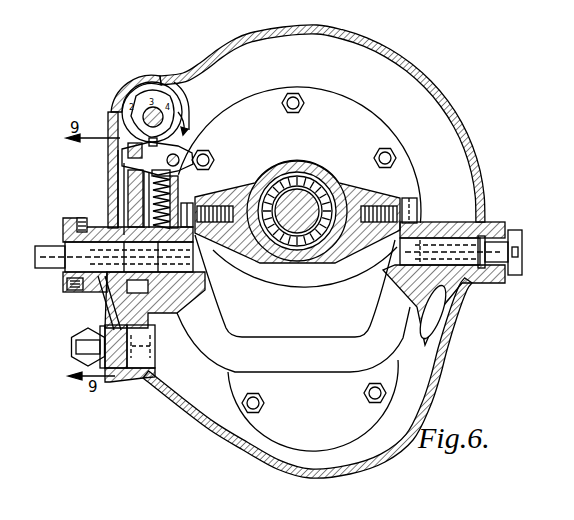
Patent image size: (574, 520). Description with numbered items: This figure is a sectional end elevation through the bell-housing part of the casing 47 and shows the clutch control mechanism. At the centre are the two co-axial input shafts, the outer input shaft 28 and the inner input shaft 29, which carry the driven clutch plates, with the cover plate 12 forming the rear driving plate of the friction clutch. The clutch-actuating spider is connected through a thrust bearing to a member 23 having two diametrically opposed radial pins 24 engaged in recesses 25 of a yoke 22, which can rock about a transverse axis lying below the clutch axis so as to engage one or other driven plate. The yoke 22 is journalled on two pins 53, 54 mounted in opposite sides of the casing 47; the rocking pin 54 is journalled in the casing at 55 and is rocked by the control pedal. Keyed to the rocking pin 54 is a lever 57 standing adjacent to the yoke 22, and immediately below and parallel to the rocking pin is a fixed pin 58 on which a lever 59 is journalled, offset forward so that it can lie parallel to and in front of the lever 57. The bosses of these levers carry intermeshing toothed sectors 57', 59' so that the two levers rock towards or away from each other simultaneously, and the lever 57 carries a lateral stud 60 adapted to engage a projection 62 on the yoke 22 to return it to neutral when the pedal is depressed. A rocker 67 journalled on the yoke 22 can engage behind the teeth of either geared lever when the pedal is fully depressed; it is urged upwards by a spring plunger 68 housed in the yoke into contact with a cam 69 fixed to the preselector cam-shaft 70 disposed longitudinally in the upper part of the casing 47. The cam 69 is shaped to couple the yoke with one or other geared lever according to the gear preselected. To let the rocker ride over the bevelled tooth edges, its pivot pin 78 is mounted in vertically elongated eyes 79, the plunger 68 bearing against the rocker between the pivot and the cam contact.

The casing 47 is at (463, 134).
The cam 69 is at (146, 100).
The preselector cam-shaft 70 is at (156, 106).
The lateral stud 60 is at (140, 165).
The lever (rocker) 67 is at (164, 160).
The spring plunger 68 is at (128, 151).
The lever 57 is at (133, 199).
The projection 62 is at (160, 196).
The lever 59 is at (96, 224).
The journal 55 is at (75, 220).
The toothed sector 59' is at (114, 286).
The rocking pin 54 is at (180, 303).
The toothed sector 57' is at (148, 295).
The fixed pin 58 is at (142, 379).
The rocker pivot pin 78 is at (196, 152).
The eyes 79 is at (215, 162).
The member 23 is at (323, 172).
The outer input shaft 28 is at (296, 258).
The inner input shaft 29 is at (305, 246).
The cover plate 12 is at (285, 250).
The radial pin 24 is at (199, 195).
The recess 25 is at (185, 181).
The yoke 22 is at (392, 340).
The pin 53 is at (466, 284).